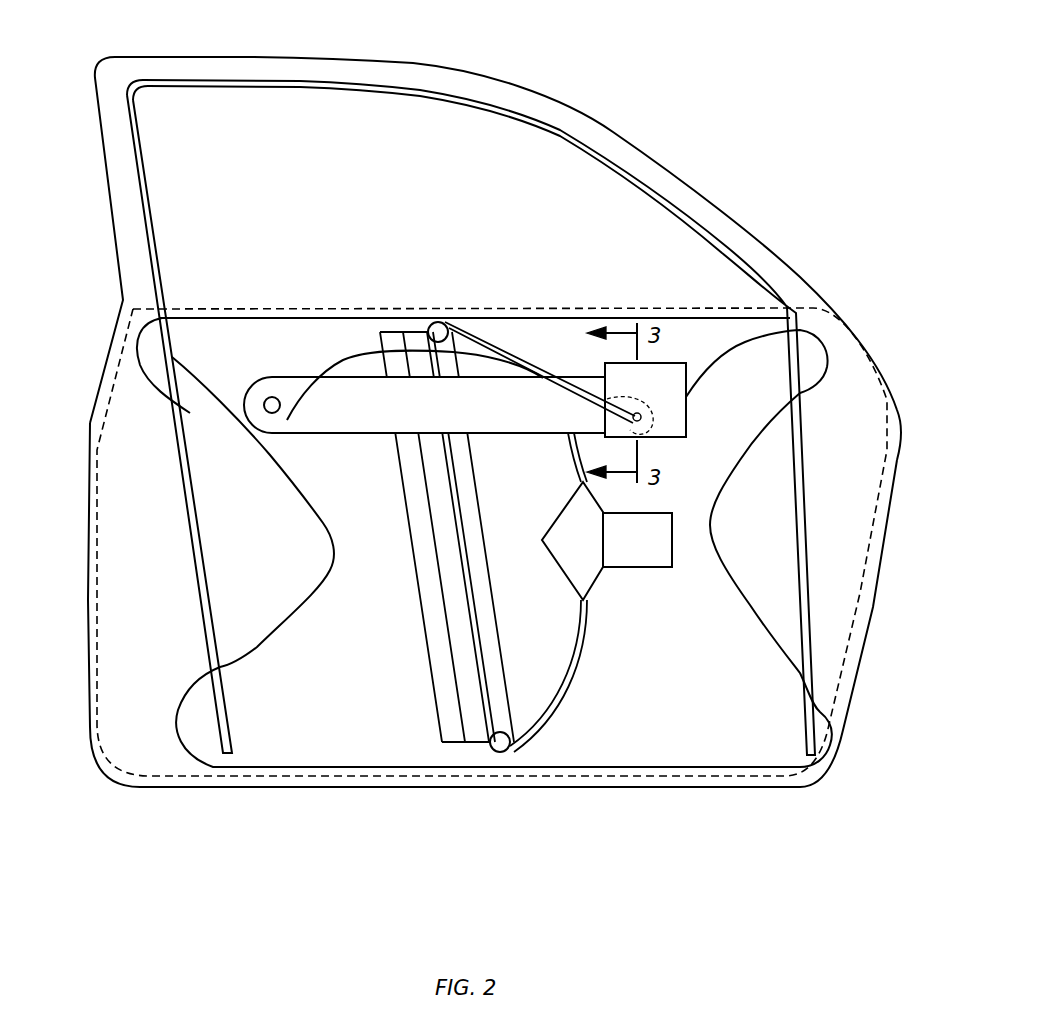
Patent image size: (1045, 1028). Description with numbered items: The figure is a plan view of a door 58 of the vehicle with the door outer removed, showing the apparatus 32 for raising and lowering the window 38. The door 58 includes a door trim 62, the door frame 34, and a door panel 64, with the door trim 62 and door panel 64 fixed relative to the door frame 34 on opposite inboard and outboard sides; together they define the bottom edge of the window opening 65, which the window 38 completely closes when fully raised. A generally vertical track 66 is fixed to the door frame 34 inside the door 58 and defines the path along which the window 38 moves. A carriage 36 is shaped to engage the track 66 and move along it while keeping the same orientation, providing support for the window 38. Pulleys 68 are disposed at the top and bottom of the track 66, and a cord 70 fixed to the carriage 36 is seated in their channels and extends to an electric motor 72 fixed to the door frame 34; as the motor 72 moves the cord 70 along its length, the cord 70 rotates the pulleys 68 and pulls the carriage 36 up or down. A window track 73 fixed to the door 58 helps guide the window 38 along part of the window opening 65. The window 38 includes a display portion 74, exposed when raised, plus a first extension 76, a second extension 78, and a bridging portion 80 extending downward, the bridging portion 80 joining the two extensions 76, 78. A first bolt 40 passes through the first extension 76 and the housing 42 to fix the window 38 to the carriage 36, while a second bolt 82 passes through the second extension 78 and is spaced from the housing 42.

The apparatus 32 is at (609, 56).
The door frame 34 is at (182, 717).
The carriage 36 is at (340, 433).
The window 38 is at (407, 117).
The first bolt 40 is at (637, 425).
The housing 42 is at (655, 418).
The door 58 is at (106, 233).
The door trim 62 is at (862, 598).
The door panel 64 is at (866, 660).
The window opening 65 is at (645, 192).
The track 66 is at (423, 640).
The pulleys 68 is at (436, 322).
The cord 70 is at (577, 675).
The electric motor 72 is at (633, 567).
The window track 73 is at (190, 570).
The display portion 74 is at (183, 245).
The first extension 76 is at (695, 353).
The second extension 78 is at (230, 363).
The bridging portion 80 is at (357, 343).
The second bolt 82 is at (265, 408).